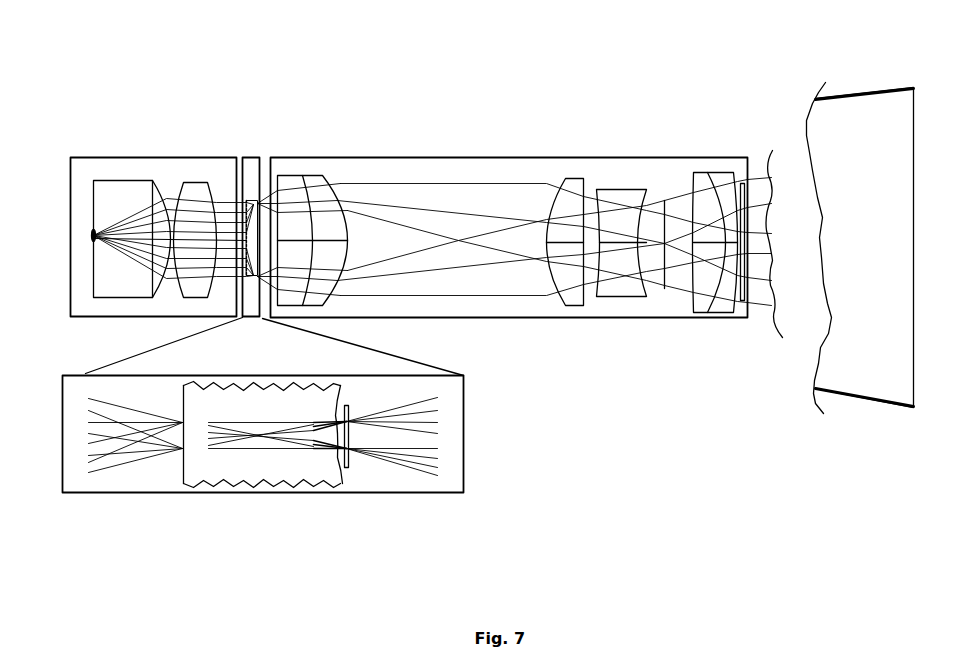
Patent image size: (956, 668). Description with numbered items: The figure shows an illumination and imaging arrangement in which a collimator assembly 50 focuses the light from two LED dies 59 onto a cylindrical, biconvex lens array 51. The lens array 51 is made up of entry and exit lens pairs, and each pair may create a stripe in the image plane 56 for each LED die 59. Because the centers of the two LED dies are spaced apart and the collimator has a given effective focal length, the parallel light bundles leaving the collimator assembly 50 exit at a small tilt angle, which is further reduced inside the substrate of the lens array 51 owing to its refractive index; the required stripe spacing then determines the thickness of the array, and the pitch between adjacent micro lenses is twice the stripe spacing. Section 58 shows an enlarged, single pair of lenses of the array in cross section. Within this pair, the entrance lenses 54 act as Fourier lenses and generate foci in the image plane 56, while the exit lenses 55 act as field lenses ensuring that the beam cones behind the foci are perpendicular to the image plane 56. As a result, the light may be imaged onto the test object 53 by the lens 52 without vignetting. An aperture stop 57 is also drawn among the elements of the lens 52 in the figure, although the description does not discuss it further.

The collimator assembly 50 is at (162, 227).
The cylindrical, biconvex lens array 51 is at (294, 227).
The lens 52 is at (527, 238).
The test object 53 is at (872, 238).
The entrance lenses 54 is at (181, 462).
The exit lenses 55 is at (348, 467).
The image plane 56 is at (347, 411).
The aperture stop 57 is at (675, 234).
The section 58 is at (263, 405).
The LED dies 59 is at (91, 234).